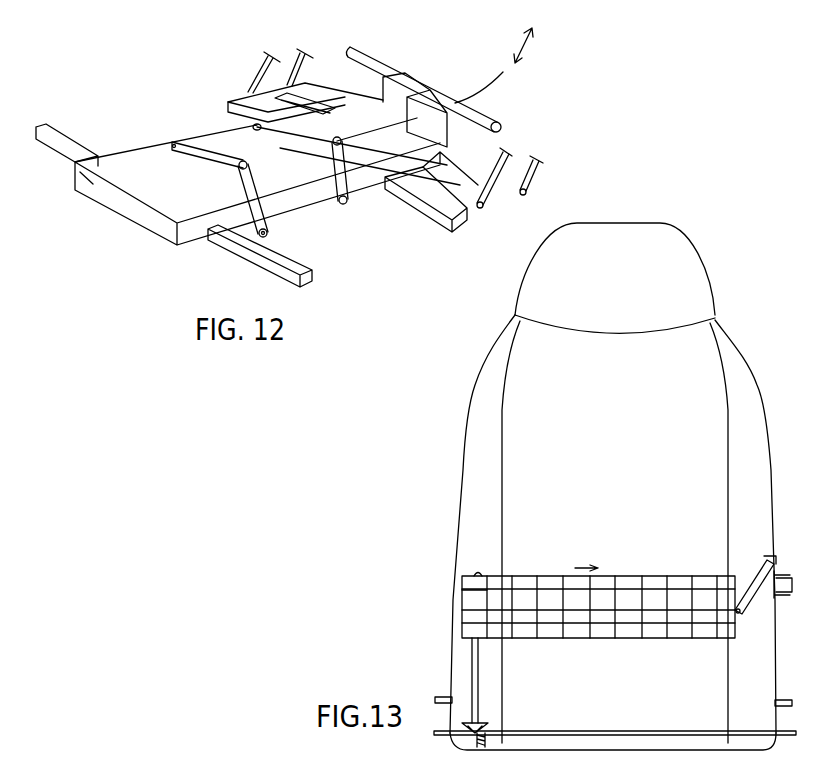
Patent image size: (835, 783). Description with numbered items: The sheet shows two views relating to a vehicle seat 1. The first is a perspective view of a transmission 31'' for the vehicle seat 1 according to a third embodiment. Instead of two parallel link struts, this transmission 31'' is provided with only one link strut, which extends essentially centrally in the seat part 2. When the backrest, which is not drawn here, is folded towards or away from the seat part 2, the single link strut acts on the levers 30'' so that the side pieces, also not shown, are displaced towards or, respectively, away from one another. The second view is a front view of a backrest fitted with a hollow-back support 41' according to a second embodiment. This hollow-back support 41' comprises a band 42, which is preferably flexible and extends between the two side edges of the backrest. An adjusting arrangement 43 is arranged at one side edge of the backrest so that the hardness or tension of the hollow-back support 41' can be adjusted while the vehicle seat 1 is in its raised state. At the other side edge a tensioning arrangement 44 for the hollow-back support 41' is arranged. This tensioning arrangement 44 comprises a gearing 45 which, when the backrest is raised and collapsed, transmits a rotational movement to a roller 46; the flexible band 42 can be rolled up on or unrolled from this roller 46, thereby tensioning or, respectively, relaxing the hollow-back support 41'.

In FIG. 12, the vehicle seat 1 is at (198, 81).
In FIG. 12, the seat part 2 is at (136, 206).
In FIG. 12, the levers 30'' is at (280, 203).
In FIG. 12, the transmission 31'' is at (439, 80).
In FIG. 13, the hollow-back support 41' is at (615, 486).
In FIG. 13, the band 42 is at (700, 633).
In FIG. 13, the adjusting arrangement 43 is at (796, 578).
In FIG. 13, the tensioning arrangement 44 is at (458, 660).
In FIG. 13, the gearing 45 is at (484, 733).
In FIG. 13, the roller 46 is at (470, 600).